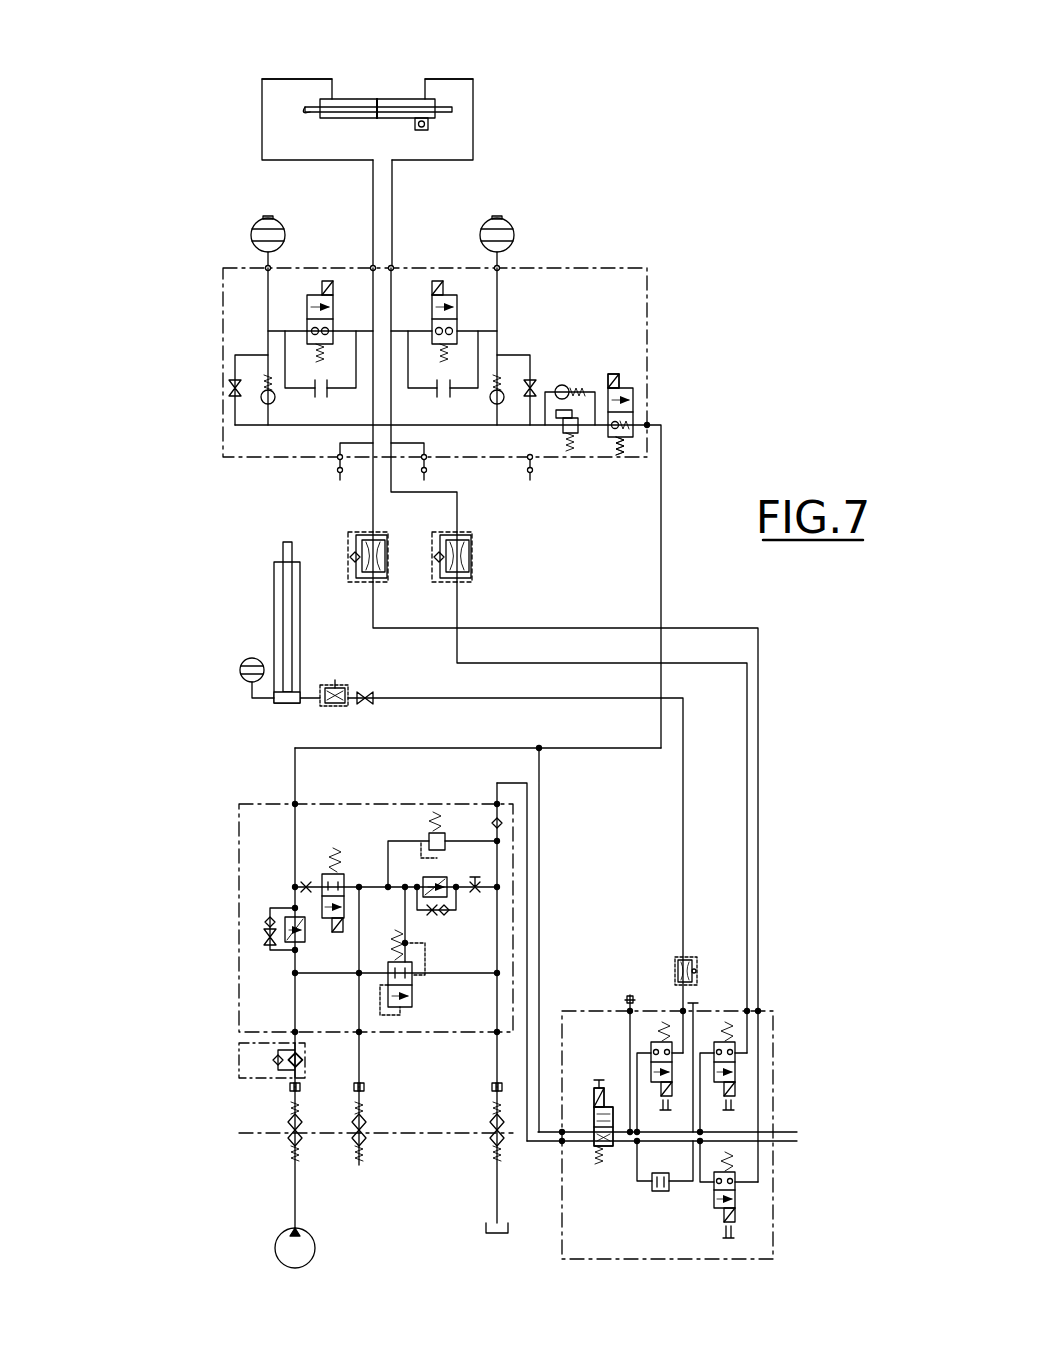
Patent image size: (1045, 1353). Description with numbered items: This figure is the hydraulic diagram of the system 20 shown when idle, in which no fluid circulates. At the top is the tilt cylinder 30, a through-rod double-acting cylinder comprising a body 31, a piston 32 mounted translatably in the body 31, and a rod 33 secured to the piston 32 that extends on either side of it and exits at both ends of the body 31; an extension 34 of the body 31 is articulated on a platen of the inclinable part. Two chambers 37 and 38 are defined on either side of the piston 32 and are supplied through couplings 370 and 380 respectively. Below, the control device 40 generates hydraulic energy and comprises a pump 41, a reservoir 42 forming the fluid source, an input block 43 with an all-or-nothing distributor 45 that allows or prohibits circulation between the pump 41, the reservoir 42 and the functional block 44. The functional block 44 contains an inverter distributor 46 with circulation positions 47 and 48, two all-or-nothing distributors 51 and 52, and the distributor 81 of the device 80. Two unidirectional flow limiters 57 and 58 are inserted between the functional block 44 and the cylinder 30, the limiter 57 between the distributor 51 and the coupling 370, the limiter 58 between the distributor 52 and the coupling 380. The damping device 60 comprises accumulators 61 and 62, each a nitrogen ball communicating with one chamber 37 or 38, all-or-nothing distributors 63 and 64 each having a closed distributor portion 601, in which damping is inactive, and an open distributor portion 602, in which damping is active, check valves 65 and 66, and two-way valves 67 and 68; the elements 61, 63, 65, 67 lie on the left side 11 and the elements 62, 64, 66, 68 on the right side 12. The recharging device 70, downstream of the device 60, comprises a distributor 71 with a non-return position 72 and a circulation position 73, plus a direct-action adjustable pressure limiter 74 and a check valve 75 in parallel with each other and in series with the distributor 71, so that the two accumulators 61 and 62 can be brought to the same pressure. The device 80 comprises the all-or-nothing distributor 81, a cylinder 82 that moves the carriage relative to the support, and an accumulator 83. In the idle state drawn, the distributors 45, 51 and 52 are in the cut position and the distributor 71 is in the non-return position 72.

The left side 11 is at (248, 112).
The right side 12 is at (528, 113).
The system 20 is at (178, 152).
The tilt cylinder 30 is at (318, 60).
The body 31 is at (363, 118).
The piston 32 is at (377, 99).
The rod 33 is at (310, 112).
The extension 34 is at (424, 130).
The first chamber 37 is at (350, 97).
The second chamber 38 is at (406, 97).
The coupling 370 is at (280, 79).
The coupling 380 is at (462, 79).
The control device 40 is at (180, 1155).
The pump 41 is at (282, 1255).
The reservoir 42 is at (468, 1232).
The input block 43 is at (236, 948).
The functional block 44 is at (776, 1162).
The all-or-nothing distributor 45 is at (340, 838).
The inverter distributor 46 is at (598, 1178).
The circulation position 47 is at (610, 1148).
The circulation position 48 is at (600, 1105).
The all-or-nothing distributor 51 is at (746, 1205).
The all-or-nothing distributor 52 is at (744, 1068).
The unidirectional flow limiter 57 is at (355, 590).
The unidirectional flow limiter 58 is at (482, 575).
The damping device 60 is at (190, 442).
The accumulator 61 is at (255, 222).
The accumulator 62 is at (510, 222).
The all-or-nothing distributor 63 is at (318, 258).
The all-or-nothing distributor 64 is at (453, 258).
The check valve 65 is at (292, 415).
The check valve 66 is at (480, 412).
The two-way valve 67 is at (215, 378).
The two-way valve 68 is at (532, 355).
The closed distributor portion 601 is at (308, 326).
The open distributor portion 602 is at (322, 290).
The recharging device 70 is at (682, 408).
The distributor 71 is at (630, 365).
The non-return position 72 is at (605, 440).
The circulation position 73 is at (640, 393).
The direct-action adjustable pressure limiter 74 is at (563, 448).
The check valve 75 is at (573, 365).
The device 80 is at (188, 708).
The all-or-nothing distributor 81 is at (652, 1030).
The cylinder 82 is at (282, 705).
The accumulator 83 is at (243, 658).